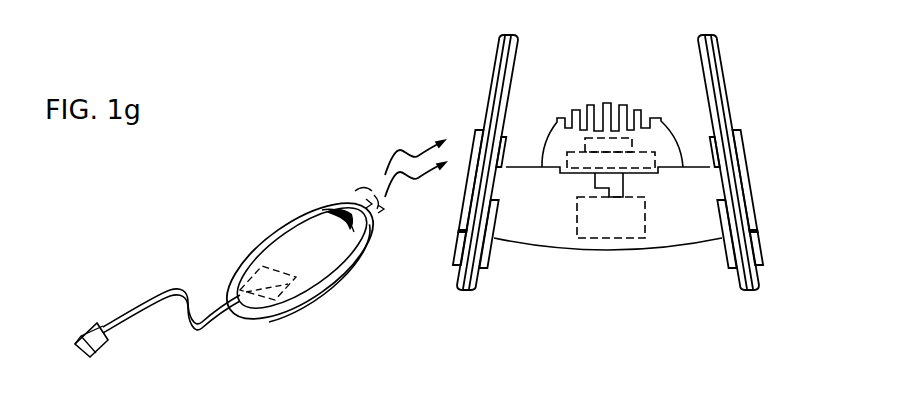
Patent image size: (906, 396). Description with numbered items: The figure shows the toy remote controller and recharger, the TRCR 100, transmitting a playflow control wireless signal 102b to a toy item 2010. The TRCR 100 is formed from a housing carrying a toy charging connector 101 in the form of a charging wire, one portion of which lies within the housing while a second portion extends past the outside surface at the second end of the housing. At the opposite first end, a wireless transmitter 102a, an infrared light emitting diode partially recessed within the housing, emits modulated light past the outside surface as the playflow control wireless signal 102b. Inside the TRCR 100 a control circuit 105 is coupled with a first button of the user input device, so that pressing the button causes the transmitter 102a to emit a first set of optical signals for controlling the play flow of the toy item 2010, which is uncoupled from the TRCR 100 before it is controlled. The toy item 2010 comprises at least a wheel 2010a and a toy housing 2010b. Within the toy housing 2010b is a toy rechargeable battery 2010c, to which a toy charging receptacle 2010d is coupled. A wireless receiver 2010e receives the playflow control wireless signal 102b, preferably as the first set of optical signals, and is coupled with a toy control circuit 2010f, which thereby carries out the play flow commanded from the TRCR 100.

The TRCR 100 is at (185, 241).
The toy charging connector 101 is at (130, 325).
The wireless transmitter 102a is at (360, 191).
The playflow control wireless signal 102b is at (393, 150).
The control circuit 105 is at (292, 281).
The toy item 2010 is at (626, 80).
The wheel 2010a is at (737, 287).
The toy housing 2010b is at (608, 103).
The toy rechargeable battery 2010c is at (577, 227).
The toy charging receptacle 2010d is at (613, 189).
The wireless receiver 2010e is at (612, 155).
The toy control circuit 2010f is at (630, 140).